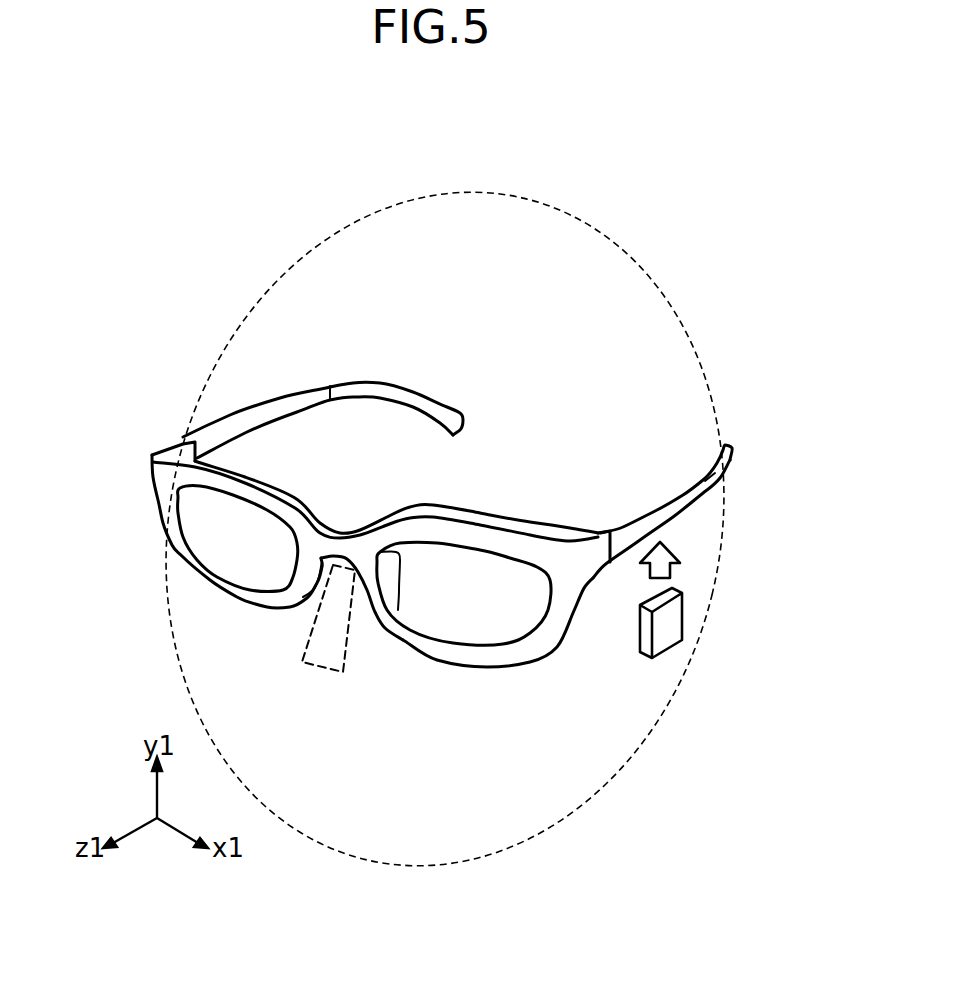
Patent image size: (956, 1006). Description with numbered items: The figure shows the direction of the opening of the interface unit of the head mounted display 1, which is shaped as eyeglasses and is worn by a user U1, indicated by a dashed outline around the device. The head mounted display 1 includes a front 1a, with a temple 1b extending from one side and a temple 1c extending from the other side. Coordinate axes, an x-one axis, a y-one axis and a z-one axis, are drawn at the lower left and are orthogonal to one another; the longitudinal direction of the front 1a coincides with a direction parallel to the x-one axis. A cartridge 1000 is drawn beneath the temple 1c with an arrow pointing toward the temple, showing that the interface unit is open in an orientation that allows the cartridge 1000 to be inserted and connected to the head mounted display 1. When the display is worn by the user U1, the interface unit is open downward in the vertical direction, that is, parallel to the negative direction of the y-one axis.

The head mounted display 1 is at (442, 503).
The front 1a is at (491, 521).
The temple 1b is at (278, 404).
The temple 1c is at (623, 528).
The user U1 is at (655, 281).
The cartridge 1000 is at (673, 623).